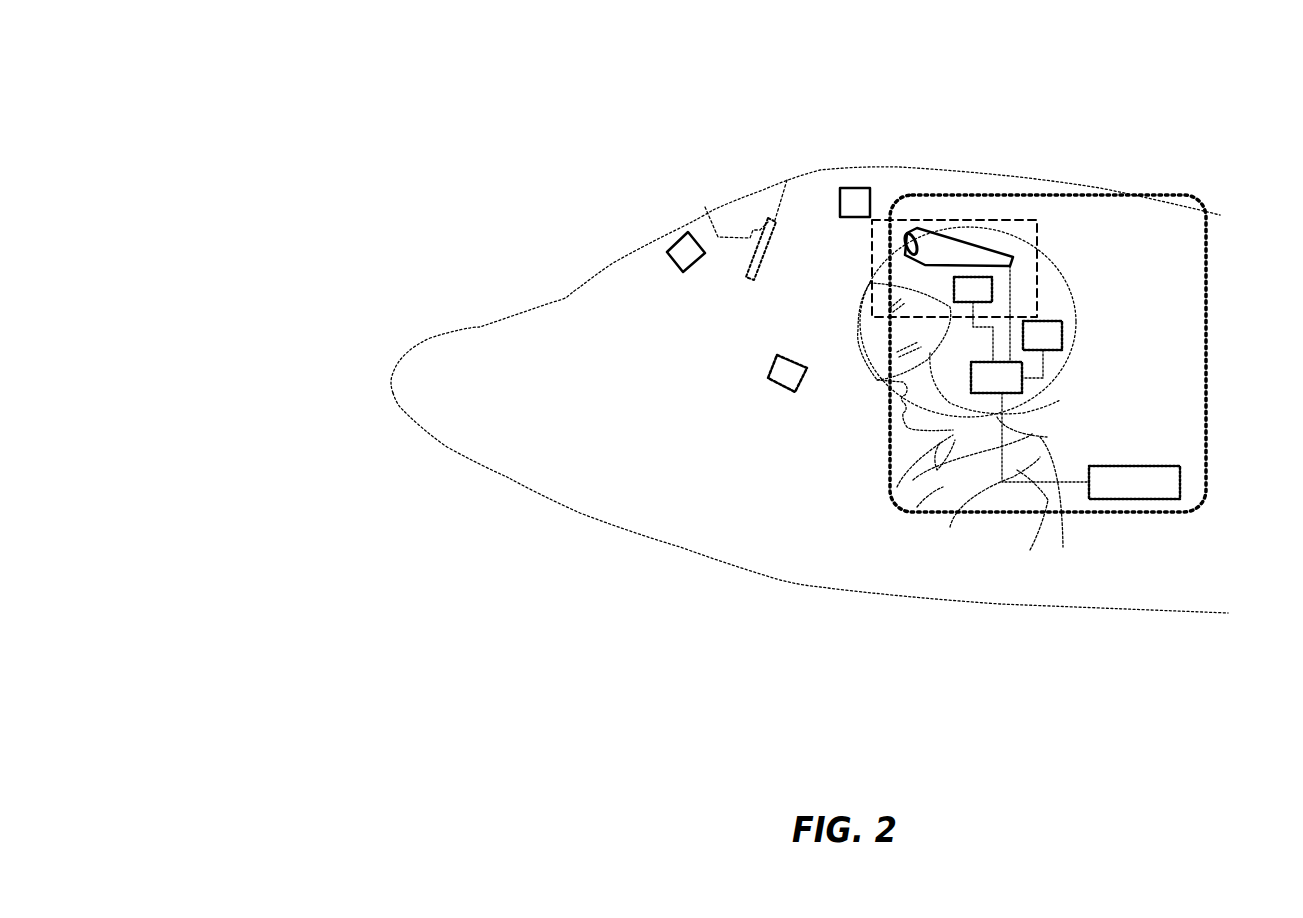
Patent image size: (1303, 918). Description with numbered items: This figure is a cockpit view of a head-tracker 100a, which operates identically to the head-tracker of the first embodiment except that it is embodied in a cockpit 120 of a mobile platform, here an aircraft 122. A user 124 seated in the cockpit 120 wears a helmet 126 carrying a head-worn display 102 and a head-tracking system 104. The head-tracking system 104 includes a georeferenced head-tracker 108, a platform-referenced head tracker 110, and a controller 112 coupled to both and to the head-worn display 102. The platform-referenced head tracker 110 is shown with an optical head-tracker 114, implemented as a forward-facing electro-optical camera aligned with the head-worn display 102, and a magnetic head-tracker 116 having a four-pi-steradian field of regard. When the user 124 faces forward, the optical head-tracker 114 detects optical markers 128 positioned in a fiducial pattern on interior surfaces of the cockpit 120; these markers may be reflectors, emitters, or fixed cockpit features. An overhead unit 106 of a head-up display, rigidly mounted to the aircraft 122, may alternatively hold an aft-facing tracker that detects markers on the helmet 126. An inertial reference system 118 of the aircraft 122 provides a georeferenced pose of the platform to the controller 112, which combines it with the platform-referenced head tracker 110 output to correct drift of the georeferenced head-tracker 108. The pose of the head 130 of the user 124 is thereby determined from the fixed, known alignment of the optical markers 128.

The head-tracker 100a is at (314, 126).
The head-worn display 102 is at (860, 358).
The head-tracking system 104 is at (1158, 197).
The overhead unit 106 is at (757, 203).
The georeferenced head-tracker 108 is at (1055, 342).
The platform-referenced head tracker 110 is at (990, 220).
The controller 112 is at (1015, 385).
The optical head-tracker 114 is at (903, 240).
The magnetic head-tracker 116 is at (980, 288).
The inertial reference system 118 is at (1168, 500).
The cockpit 120 is at (1150, 592).
The aircraft 122 is at (503, 480).
The user 124 is at (943, 497).
The helmet 126 is at (1067, 280).
The optical markers 128 is at (850, 188).
The head 130 is at (900, 412).